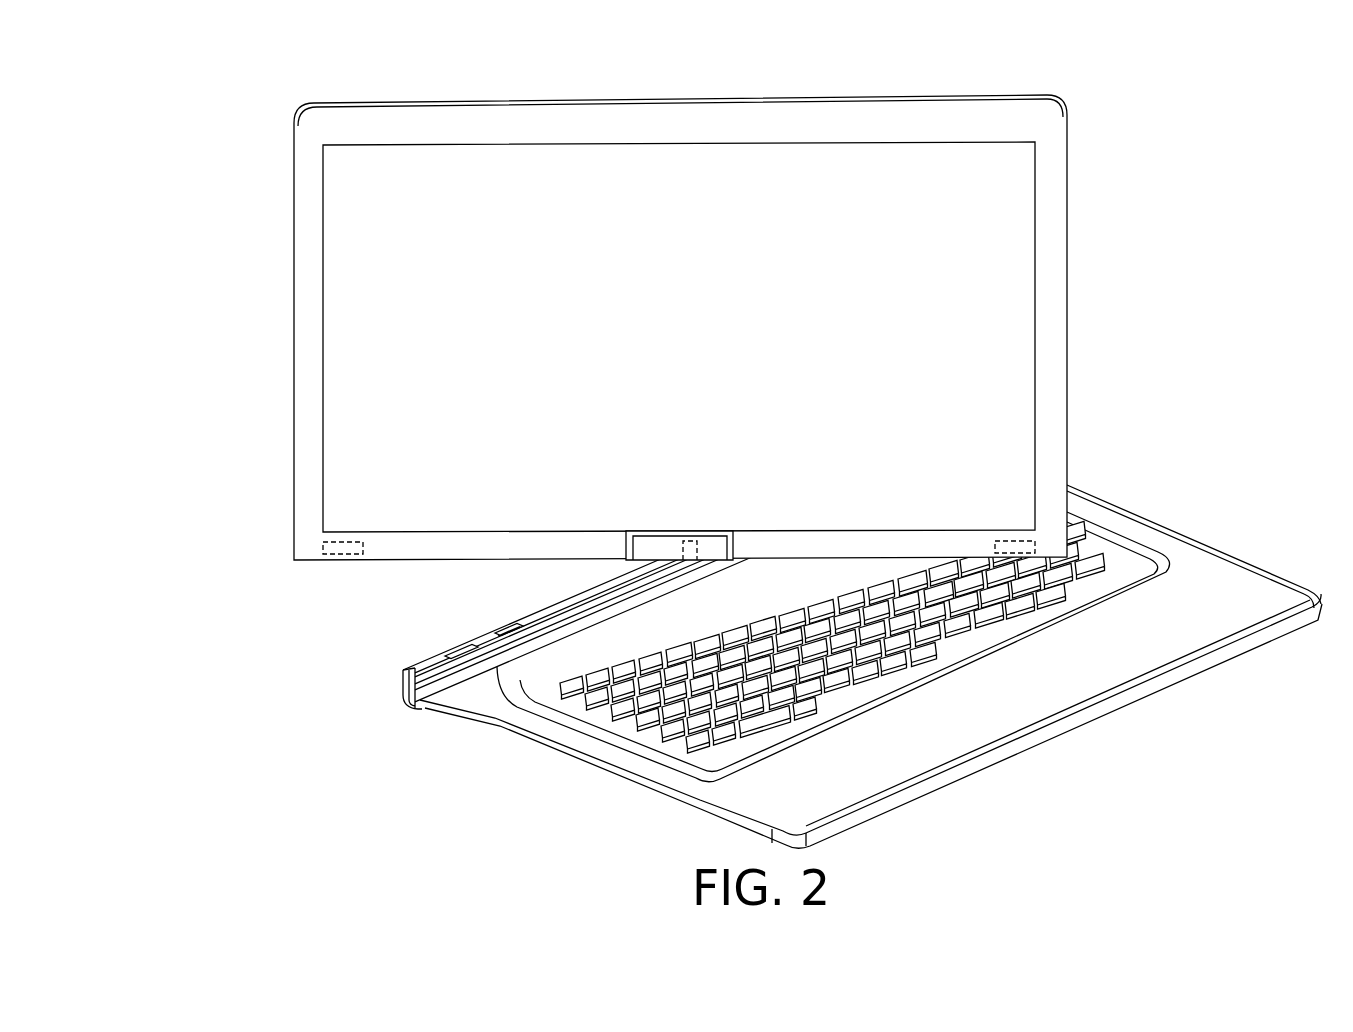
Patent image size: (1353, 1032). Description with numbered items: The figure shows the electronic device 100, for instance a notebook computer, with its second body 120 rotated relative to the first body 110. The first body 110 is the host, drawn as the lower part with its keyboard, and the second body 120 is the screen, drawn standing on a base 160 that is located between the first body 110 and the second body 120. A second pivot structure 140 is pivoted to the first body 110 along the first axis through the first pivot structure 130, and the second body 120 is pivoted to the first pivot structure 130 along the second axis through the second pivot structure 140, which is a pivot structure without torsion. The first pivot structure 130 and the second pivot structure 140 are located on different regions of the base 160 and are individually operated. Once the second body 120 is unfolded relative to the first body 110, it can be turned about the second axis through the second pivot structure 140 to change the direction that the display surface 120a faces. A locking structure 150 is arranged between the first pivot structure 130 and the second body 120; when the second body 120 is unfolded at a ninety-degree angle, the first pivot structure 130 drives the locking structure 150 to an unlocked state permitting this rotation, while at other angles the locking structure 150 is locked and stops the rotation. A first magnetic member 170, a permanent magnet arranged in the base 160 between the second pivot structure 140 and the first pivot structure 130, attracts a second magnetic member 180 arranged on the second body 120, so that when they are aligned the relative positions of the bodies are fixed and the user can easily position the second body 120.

The electronic device 100 is at (1314, 840).
The first body 110 is at (825, 666).
The second body 120 is at (330, 128).
The display surface 120a is at (987, 261).
The first pivot structure 130 is at (502, 675).
The second pivot structure 140 is at (700, 545).
The locking structure 150 is at (510, 617).
The base 160 is at (408, 690).
The first magnetic member 170 is at (455, 647).
The second magnetic member 180 is at (322, 546).